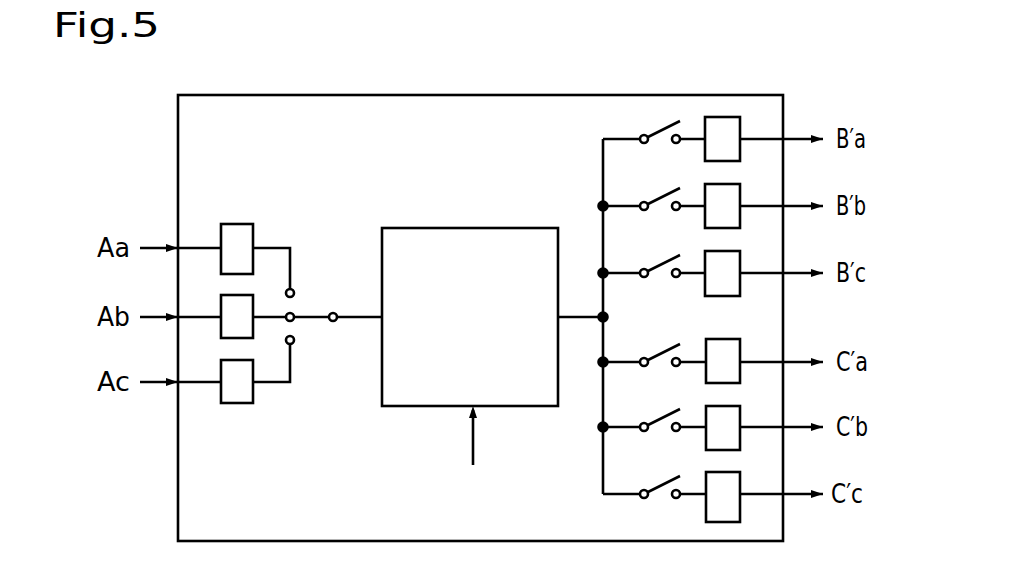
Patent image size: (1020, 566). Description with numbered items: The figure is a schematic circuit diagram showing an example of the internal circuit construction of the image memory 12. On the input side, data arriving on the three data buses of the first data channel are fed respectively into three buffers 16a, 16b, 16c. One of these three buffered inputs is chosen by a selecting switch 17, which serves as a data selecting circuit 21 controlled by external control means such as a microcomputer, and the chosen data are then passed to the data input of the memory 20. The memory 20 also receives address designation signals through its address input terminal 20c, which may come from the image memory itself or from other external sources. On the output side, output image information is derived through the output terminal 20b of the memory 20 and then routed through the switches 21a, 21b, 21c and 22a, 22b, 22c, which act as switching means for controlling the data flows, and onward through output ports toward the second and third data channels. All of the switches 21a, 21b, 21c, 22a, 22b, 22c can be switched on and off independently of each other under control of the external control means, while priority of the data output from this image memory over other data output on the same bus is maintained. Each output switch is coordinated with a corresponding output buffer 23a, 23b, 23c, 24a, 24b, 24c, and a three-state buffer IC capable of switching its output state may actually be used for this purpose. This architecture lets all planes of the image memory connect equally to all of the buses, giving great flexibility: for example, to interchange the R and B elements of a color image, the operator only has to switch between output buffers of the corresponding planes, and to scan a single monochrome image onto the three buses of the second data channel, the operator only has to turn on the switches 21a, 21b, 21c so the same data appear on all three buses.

The image memory 12 is at (267, 94).
The buffer 16a is at (238, 223).
The buffer 16b is at (253, 323).
The buffer 16c is at (237, 405).
The selecting switch 17 is at (333, 322).
The memory 20 is at (435, 187).
The output terminal 20b is at (583, 304).
The address input terminal 20c is at (495, 435).
The data selecting circuit 21 is at (284, 315).
The switch 21a is at (647, 123).
The switch 21b is at (654, 191).
The switch 21c is at (654, 259).
The switch 22a is at (654, 350).
The switch 22b is at (654, 415).
The switch 22c is at (654, 481).
The output buffer 23a is at (733, 128).
The output buffer 23b is at (730, 195).
The output buffer 23c is at (730, 262).
The output buffer 24a is at (733, 350).
The output buffer 24b is at (733, 417).
The output buffer 24c is at (733, 482).